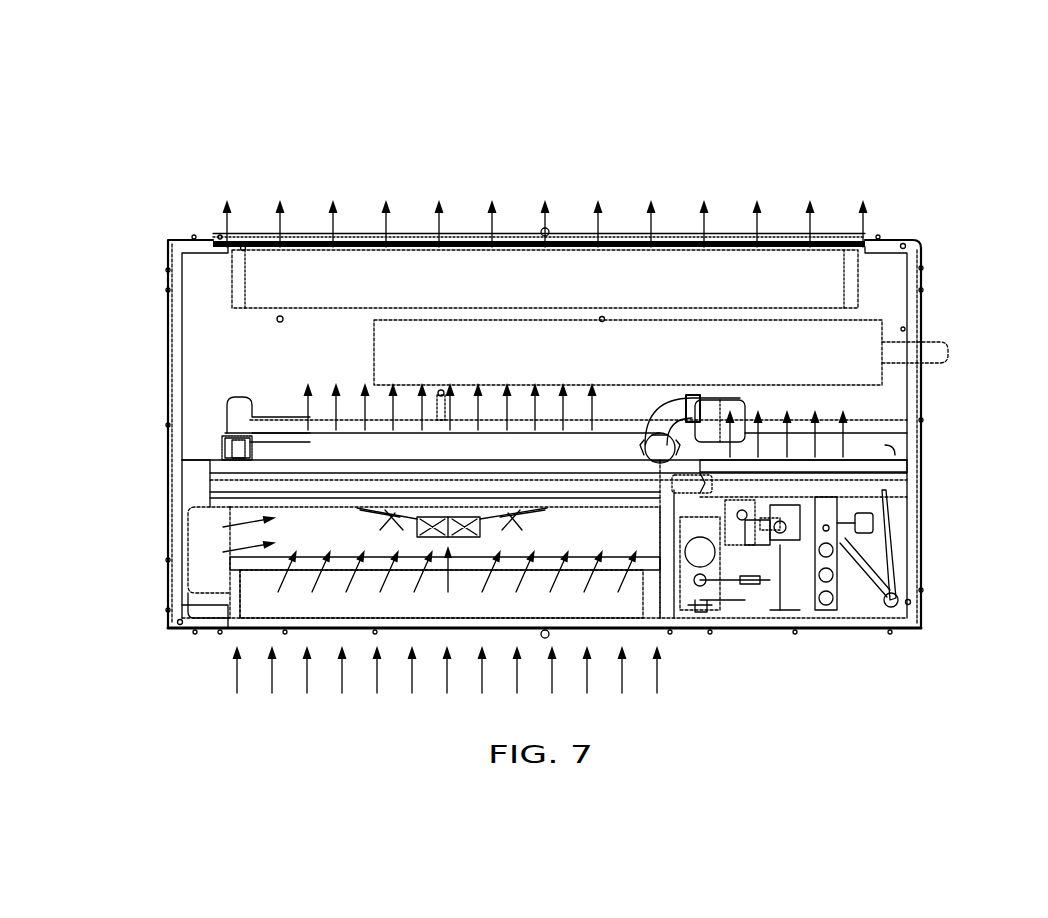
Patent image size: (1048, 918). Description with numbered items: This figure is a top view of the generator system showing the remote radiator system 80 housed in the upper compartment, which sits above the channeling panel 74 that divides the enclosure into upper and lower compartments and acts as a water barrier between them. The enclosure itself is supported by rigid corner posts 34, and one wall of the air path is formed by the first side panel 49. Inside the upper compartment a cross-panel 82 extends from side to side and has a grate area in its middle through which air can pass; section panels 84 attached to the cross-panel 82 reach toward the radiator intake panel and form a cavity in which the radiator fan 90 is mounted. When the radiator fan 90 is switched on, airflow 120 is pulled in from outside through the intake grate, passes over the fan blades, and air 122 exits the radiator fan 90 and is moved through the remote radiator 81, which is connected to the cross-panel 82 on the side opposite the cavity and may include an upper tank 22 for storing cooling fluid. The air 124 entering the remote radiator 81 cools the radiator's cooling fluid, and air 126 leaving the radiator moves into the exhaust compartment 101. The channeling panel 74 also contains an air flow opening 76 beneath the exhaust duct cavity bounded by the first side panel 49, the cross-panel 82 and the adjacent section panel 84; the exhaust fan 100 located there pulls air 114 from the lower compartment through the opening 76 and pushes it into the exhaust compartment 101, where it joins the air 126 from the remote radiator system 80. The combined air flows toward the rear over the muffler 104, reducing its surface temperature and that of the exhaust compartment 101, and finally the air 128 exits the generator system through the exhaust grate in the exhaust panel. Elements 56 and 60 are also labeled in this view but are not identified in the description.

The remote radiator system 80 is at (182, 131).
The corner posts 34 is at (242, 247).
The exiting air 128 is at (705, 232).
The exhaust compartment 101 is at (222, 322).
The channeling panel 74 is at (222, 362).
The muffler 104 is at (870, 326).
The outlet port 56 is at (940, 355).
The air exiting the radiator 126 is at (300, 408).
The enclosure 60 is at (168, 435).
The first side panel 49 is at (878, 410).
The cross-panel 82 is at (203, 472).
The exhaust fan 100 is at (840, 497).
The air entering the remote radiator 124 is at (403, 530).
The radiator fan 90 is at (490, 530).
The remote radiator 81 is at (568, 450).
The air flow opening 76 is at (875, 545).
The upper tank 22 is at (702, 560).
The air from the lower compartment 114 is at (787, 540).
The section panels 84 is at (830, 588).
The air exiting the radiator fan 122 is at (637, 590).
The airflow 120 is at (623, 678).